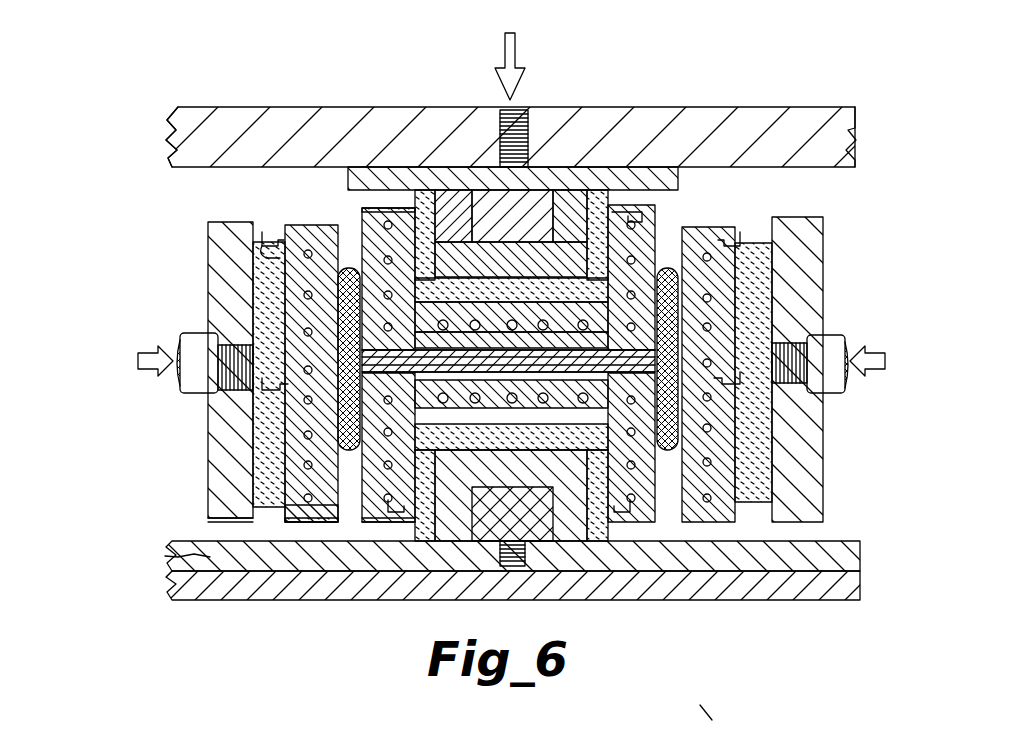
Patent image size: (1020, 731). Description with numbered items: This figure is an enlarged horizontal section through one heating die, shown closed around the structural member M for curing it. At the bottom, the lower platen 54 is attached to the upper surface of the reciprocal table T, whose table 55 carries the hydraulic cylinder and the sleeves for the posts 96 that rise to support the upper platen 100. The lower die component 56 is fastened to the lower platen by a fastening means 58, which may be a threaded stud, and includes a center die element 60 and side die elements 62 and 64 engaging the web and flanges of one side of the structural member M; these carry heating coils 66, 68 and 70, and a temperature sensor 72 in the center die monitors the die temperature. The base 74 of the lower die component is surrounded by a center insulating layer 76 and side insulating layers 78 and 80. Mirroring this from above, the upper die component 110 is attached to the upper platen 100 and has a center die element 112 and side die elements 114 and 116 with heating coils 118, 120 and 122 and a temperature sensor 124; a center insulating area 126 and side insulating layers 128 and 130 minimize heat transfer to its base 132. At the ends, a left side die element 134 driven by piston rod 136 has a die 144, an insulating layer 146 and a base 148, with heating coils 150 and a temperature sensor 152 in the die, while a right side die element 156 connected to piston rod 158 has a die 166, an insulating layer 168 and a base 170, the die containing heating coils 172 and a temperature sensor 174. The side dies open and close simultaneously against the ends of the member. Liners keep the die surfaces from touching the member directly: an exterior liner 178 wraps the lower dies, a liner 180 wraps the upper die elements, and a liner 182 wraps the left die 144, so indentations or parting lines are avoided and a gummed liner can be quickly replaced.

The upper platen 100 is at (180, 112).
The upper die component 110 is at (700, 165).
The center die element 112 is at (560, 175).
The side die element 114 is at (368, 215).
The side die element 116 is at (640, 260).
The heating coil 118 is at (470, 300).
The heating coil 120 is at (390, 300).
The heating coil 122 is at (625, 215).
The temperature sensor 124 is at (522, 112).
The center insulating area 126 is at (425, 285).
The side insulating layer 128 is at (445, 200).
The side insulating layer 130 is at (618, 195).
The base 132 is at (490, 200).
The left side die element 134 is at (265, 215).
The piston rod 136 is at (178, 358).
The die 144 is at (300, 205).
The insulating layer 146 is at (240, 490).
The base 148 is at (215, 250).
The heating coils 150 is at (300, 465).
The temperature sensor 152 is at (330, 385).
The right side die element 156 is at (750, 222).
The piston rod 158 is at (830, 345).
The die 166 is at (672, 280).
The insulating layer 168 is at (790, 262).
The base 170 is at (740, 260).
The heating coils 172 is at (700, 300).
The temperature sensor 174 is at (735, 362).
The liner 180 is at (660, 215).
The liner 182 is at (295, 515).
The structural member M is at (340, 235).
The lower platen 54 is at (856, 586).
The table 55 is at (700, 598).
The lower die component 56 is at (300, 541).
The fastening means 58 is at (520, 541).
The center die element 60 is at (450, 541).
The side die element 62 is at (220, 560).
The side die element 64 is at (650, 541).
The heating coil 66 is at (470, 541).
The heating coil 68 is at (352, 412).
The heating coil 70 is at (620, 541).
The temperature sensor 72 is at (500, 541).
The base 74 is at (400, 541).
The center insulating layer 76 is at (560, 541).
The side insulating layer 78 is at (330, 541).
The side insulating layer 80 is at (600, 541).
The posts 96 is at (712, 728).
The exterior liner 178 is at (690, 541).
The reciprocal table T is at (758, 573).